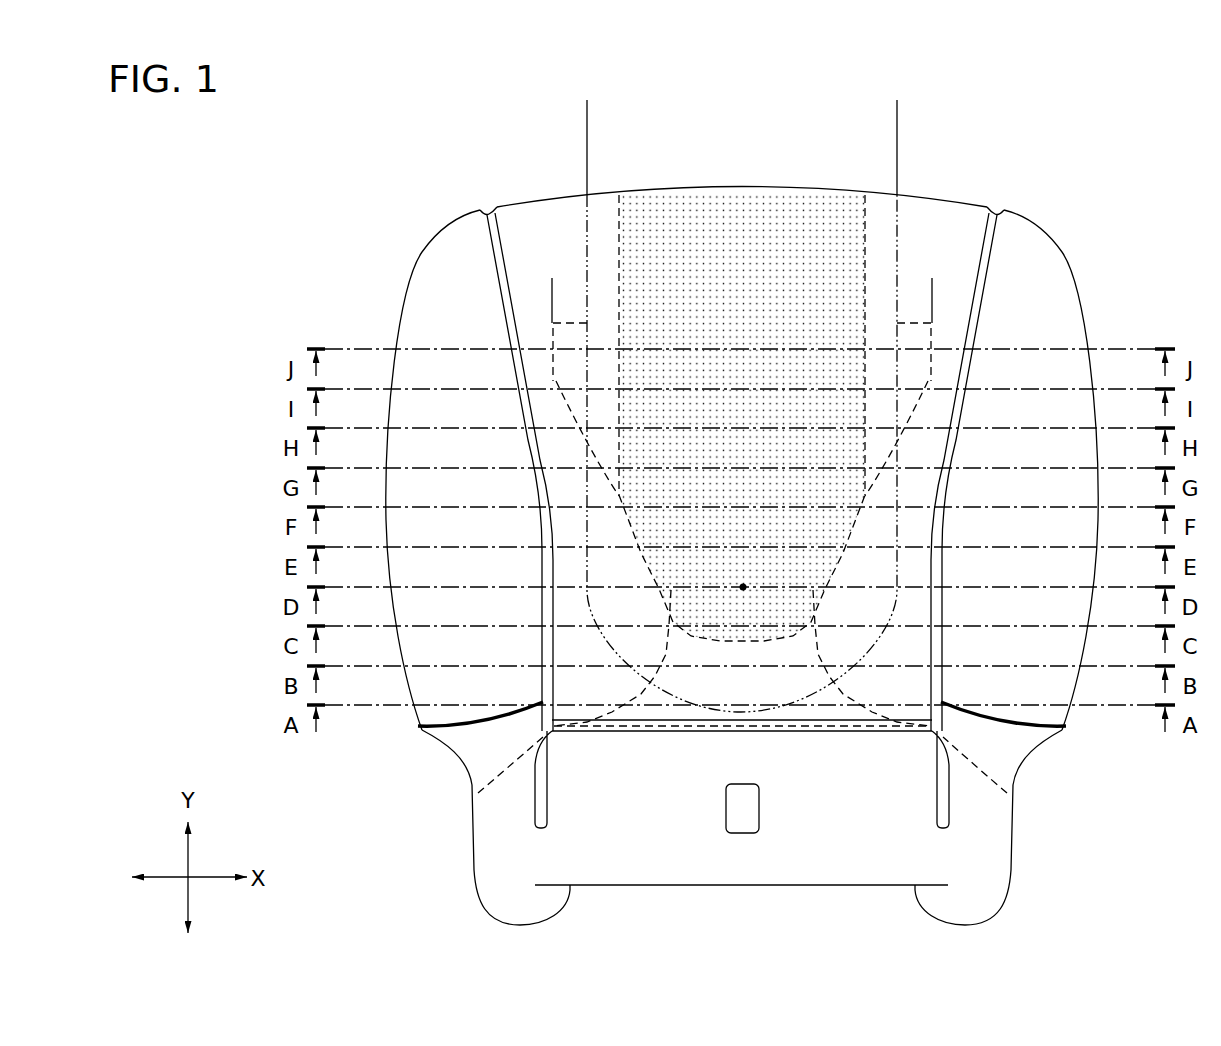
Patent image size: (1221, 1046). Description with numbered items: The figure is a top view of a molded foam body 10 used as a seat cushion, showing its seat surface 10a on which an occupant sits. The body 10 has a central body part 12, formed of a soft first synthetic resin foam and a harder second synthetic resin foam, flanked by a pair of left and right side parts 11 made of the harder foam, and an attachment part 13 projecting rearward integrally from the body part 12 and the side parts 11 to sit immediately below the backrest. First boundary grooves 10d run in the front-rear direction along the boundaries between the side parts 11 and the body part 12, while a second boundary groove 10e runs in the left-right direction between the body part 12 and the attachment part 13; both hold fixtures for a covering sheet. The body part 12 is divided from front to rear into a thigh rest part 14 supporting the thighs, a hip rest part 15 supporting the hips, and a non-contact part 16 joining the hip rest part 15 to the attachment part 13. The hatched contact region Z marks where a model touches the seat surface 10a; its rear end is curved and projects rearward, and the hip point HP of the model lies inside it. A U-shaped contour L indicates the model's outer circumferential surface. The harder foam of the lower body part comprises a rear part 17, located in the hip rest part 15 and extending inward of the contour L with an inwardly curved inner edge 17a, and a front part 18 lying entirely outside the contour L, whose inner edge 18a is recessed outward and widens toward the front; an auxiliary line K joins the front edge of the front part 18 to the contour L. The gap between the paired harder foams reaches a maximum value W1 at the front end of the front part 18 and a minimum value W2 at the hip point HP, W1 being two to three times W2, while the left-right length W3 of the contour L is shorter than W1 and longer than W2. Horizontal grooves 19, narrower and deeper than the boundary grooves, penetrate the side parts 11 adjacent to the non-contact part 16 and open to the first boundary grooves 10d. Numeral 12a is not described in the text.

The molded foam body 10 is at (1110, 183).
The seat surface 10a is at (465, 222).
The first boundary grooves 10d is at (507, 298).
The second boundary groove 10e is at (823, 727).
The side parts 11 is at (425, 250).
The body part 12 is at (947, 196).
The upper edge of pad 12a is at (531, 208).
The attachment part 13 is at (472, 823).
The thigh rest part 14 is at (958, 328).
The hip rest part 15 is at (920, 568).
The non-contact part 16 is at (923, 685).
The rear part 17 is at (806, 648).
The inner edge of the rear part 17a is at (668, 647).
The front part 18 is at (920, 372).
The inner edge of the front part 18a is at (564, 372).
The horizontal grooves 19 is at (1020, 728).
The contact region Z is at (800, 215).
The auxiliary line K is at (565, 322).
The contour L is at (897, 250).
The hip point HP is at (743, 592).
The maximum value of the gap W1 is at (564, 290).
The minimum value of the gap W2 is at (683, 587).
The length of the contour W3 is at (599, 110).